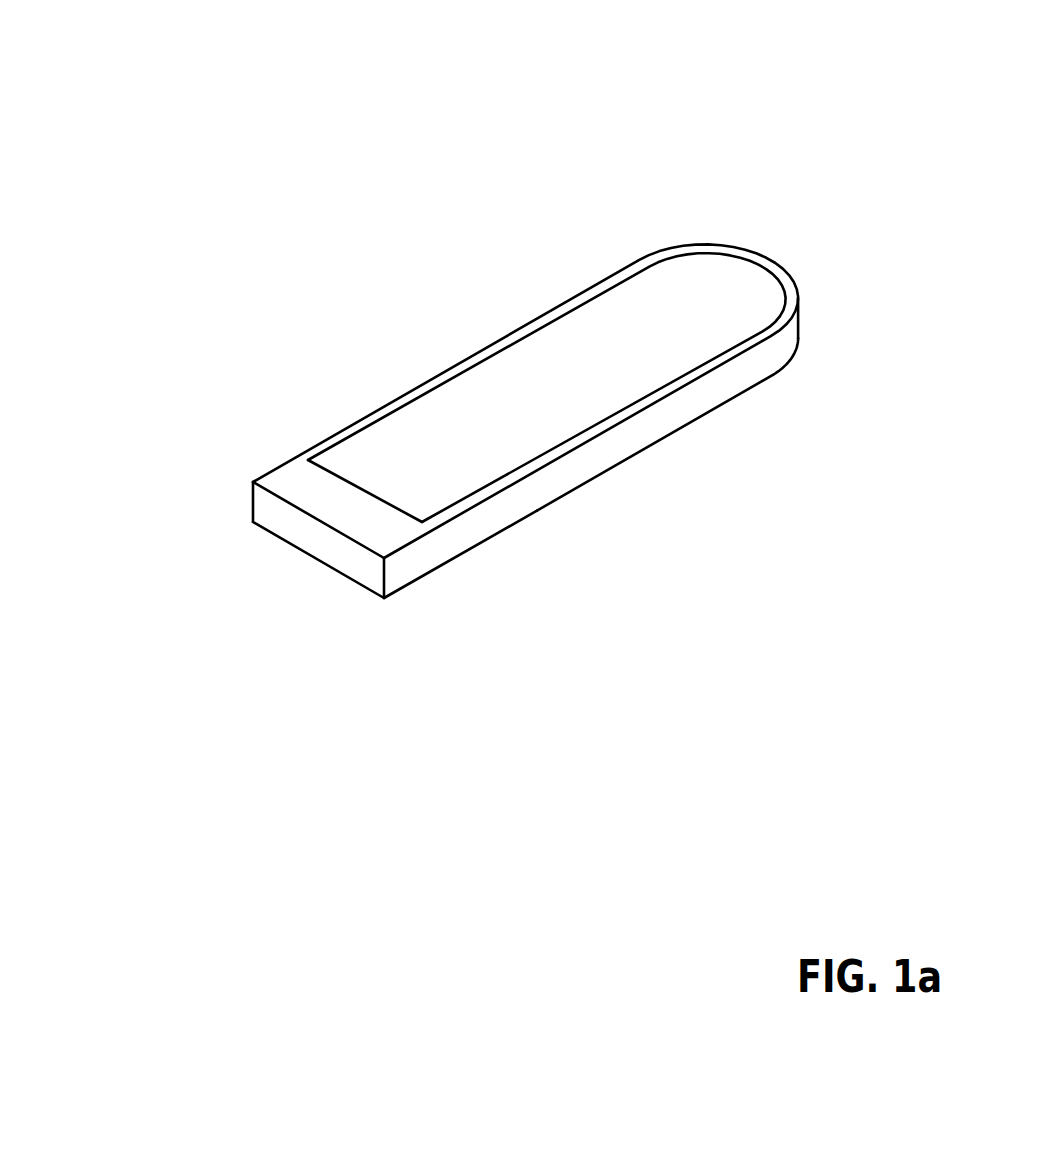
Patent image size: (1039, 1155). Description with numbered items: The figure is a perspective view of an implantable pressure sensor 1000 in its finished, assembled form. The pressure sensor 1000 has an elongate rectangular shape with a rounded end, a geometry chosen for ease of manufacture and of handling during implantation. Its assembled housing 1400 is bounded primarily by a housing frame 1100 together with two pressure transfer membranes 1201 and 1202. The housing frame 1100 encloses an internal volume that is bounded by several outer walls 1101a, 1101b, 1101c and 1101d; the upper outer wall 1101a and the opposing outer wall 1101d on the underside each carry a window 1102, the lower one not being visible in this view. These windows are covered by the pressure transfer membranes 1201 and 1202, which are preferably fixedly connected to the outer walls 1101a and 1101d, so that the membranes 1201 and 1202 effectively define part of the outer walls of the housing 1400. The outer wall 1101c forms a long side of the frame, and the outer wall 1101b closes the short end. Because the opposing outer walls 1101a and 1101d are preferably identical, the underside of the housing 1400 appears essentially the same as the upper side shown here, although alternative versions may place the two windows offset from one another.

The implantable pressure sensor 1000 is at (168, 185).
The housing frame 1100 is at (462, 540).
The outer wall 1101a is at (293, 480).
The outer wall 1101b is at (275, 523).
The outer wall 1101c is at (677, 412).
The outer wall 1101d is at (277, 552).
The window 1102 is at (362, 497).
The pressure transfer membrane 1201 is at (460, 392).
The pressure transfer membrane 1202 is at (537, 517).
The housing 1400 is at (213, 608).